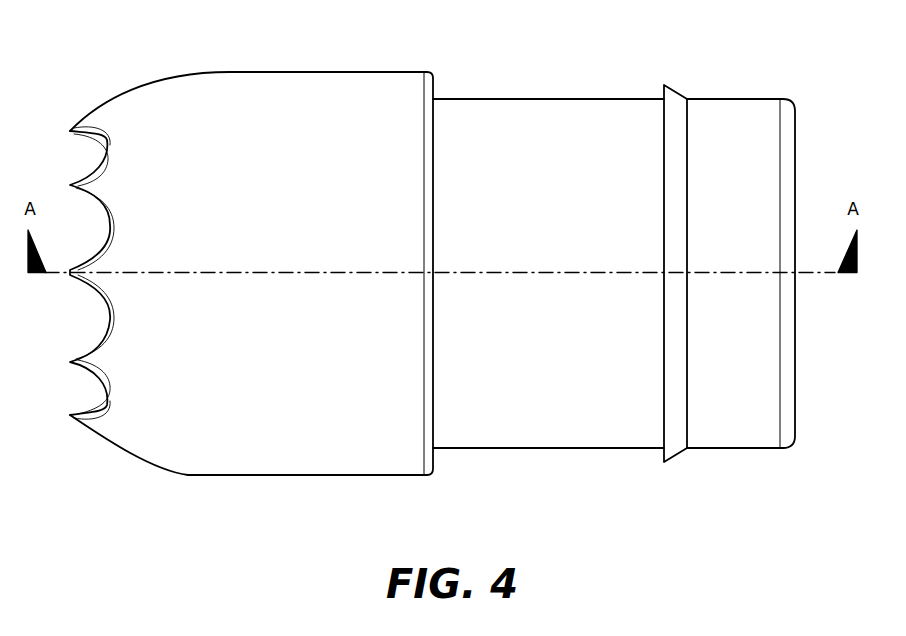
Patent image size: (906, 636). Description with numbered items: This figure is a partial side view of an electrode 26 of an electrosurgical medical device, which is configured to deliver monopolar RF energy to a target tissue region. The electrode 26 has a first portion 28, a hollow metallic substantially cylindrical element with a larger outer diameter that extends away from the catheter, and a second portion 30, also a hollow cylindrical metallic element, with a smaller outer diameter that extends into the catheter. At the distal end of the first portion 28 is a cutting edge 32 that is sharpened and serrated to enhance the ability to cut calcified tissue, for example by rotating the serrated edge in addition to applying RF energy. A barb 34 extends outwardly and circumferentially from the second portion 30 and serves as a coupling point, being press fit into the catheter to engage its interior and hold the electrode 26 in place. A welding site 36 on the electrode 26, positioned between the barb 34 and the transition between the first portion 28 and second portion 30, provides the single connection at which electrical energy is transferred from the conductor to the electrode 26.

The electrode 26 is at (187, 476).
The first portion 28 is at (288, 477).
The second portion 30 is at (531, 415).
The cutting edge 32 is at (70, 416).
The barb 34 is at (683, 418).
The welding site 36 is at (434, 78).